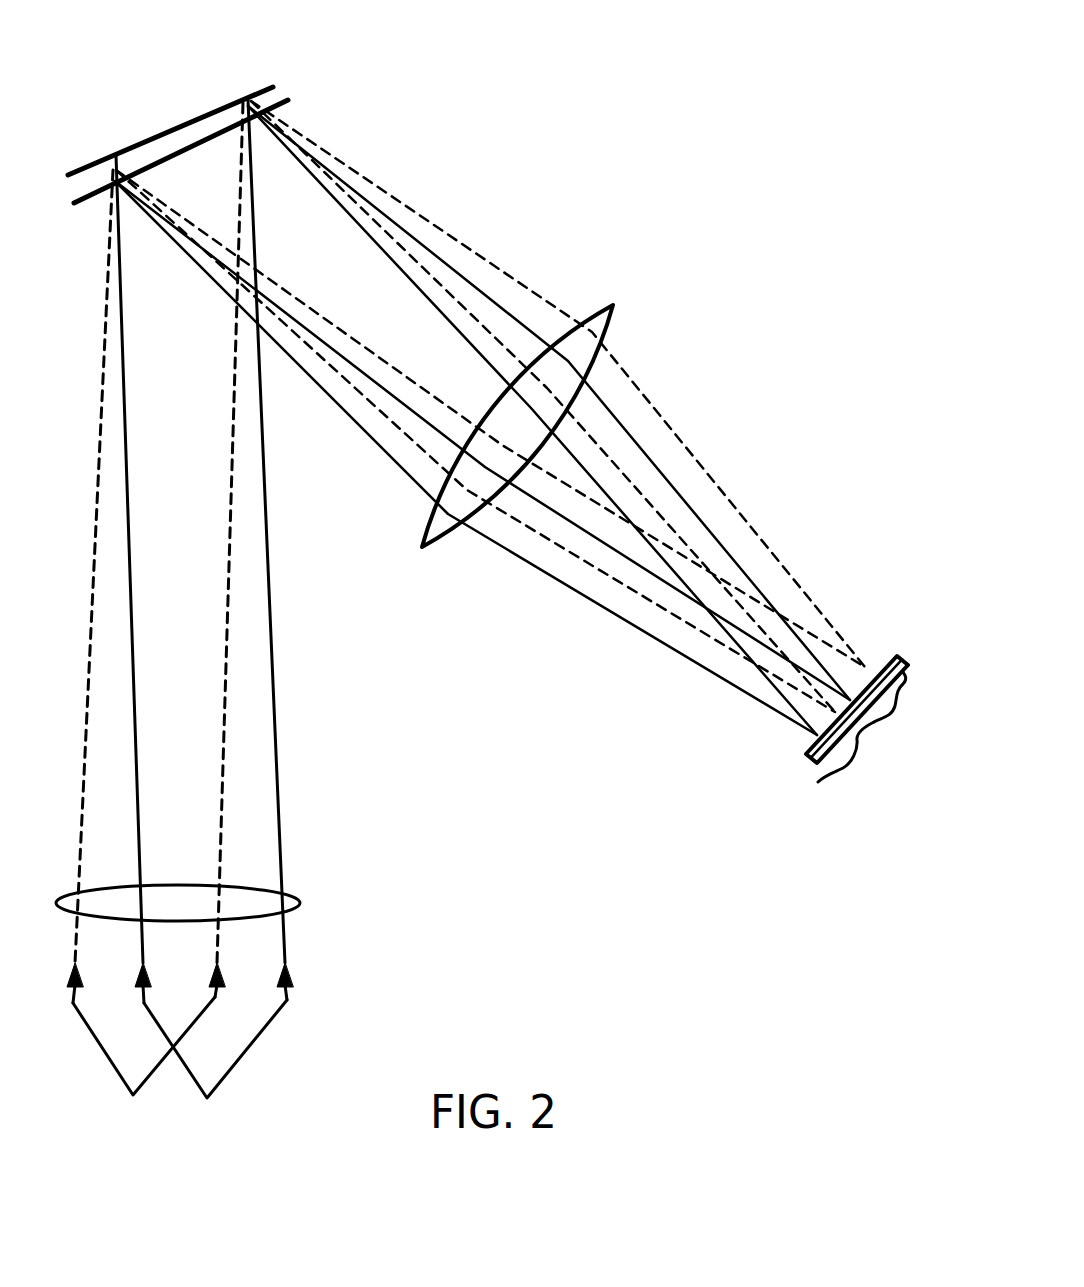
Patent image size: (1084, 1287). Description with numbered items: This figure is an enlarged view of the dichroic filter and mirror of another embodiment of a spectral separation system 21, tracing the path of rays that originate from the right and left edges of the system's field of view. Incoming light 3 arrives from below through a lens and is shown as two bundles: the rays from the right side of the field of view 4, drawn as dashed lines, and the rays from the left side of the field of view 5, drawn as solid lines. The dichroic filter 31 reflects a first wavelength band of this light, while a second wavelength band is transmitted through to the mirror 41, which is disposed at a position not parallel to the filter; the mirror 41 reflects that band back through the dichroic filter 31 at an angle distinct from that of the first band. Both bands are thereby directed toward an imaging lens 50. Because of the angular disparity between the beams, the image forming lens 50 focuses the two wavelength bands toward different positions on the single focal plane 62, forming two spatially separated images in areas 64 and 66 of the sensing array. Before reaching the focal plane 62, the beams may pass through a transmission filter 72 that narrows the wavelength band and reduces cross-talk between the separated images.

The incoming light 3 is at (302, 903).
The right side of the field of view 4 is at (133, 1095).
The left side of the field of view 5 is at (207, 1098).
The spectral separation system 21 is at (628, 254).
The dichroic filter 31 is at (278, 100).
The mirror 41 is at (130, 155).
The imaging lens 50 is at (613, 332).
The focal plane 62 is at (807, 773).
The image area 64 is at (855, 758).
The image area 66 is at (897, 712).
The transmission filter 72 is at (872, 672).